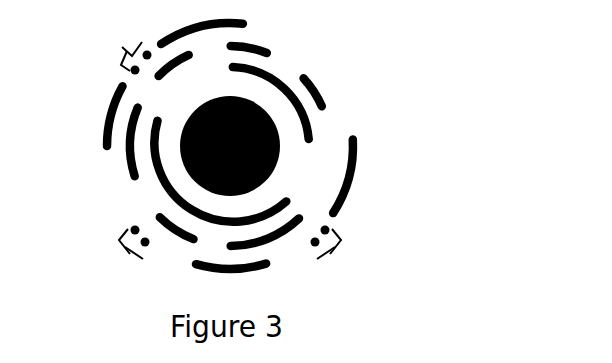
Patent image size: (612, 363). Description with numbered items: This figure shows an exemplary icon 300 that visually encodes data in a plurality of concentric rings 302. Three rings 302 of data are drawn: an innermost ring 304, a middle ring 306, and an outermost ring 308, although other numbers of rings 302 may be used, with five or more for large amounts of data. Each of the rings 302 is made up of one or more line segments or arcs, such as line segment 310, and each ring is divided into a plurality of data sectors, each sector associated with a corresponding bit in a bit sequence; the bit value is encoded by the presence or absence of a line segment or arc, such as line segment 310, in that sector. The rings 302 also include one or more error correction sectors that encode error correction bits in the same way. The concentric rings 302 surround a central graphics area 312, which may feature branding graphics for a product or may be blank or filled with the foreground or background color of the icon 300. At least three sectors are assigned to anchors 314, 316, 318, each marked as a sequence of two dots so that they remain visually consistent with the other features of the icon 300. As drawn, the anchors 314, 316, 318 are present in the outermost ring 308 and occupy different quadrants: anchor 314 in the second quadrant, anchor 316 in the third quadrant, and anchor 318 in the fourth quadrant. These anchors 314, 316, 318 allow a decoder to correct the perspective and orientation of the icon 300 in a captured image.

The icon 300 is at (488, 118).
The concentric rings 302 is at (160, 198).
The innermost ring 304 is at (160, 197).
The middle ring 306 is at (120, 133).
The outermost ring 308 is at (118, 84).
The line segment 310 is at (306, 83).
The central graphics area 312 is at (279, 154).
The anchor 314 is at (340, 258).
The anchor 316 is at (120, 261).
The anchor 318 is at (115, 48).